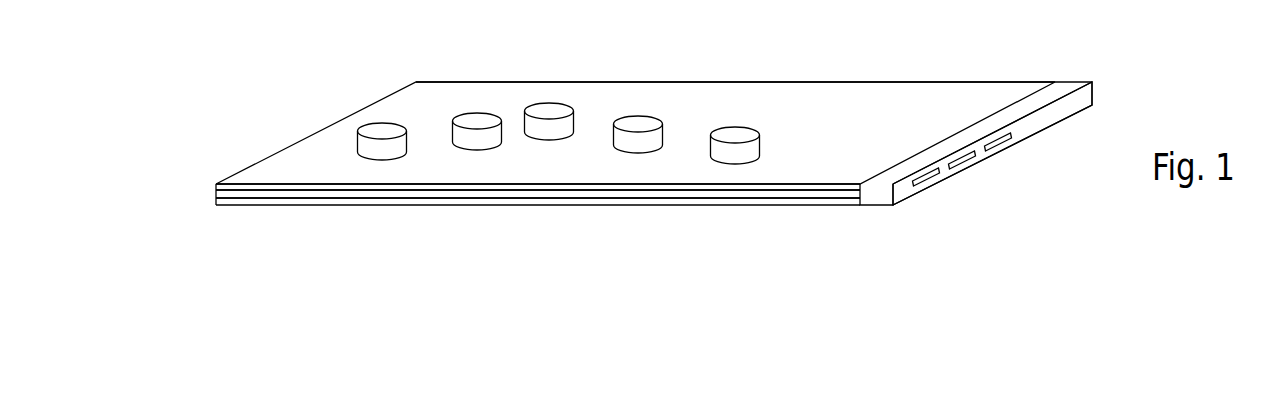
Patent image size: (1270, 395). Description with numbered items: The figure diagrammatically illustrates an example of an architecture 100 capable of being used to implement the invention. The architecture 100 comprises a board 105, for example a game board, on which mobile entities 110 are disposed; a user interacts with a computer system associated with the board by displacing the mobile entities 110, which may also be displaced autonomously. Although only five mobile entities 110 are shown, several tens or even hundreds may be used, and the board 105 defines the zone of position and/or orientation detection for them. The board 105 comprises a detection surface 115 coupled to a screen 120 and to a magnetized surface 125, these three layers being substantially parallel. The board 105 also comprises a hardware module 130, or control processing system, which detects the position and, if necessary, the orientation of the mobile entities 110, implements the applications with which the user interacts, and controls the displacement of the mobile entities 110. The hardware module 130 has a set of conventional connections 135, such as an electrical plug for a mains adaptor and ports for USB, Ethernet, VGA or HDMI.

The architecture 100 is at (1122, 78).
The board 105 is at (893, 93).
The mobile entities 110 is at (548, 108).
The detection surface 115 is at (216, 193).
The screen 120 is at (216, 185).
The magnetized surface 125 is at (216, 203).
The hardware module 130 is at (1030, 127).
The connections 135 is at (935, 179).